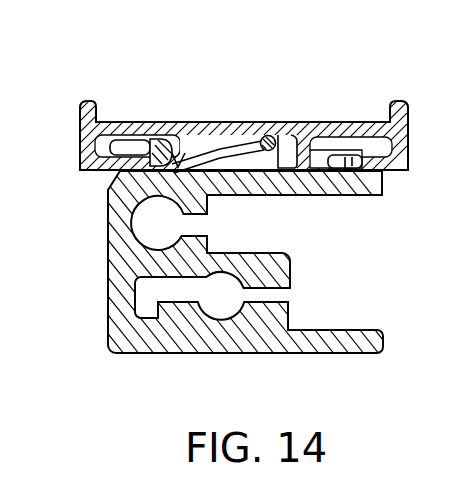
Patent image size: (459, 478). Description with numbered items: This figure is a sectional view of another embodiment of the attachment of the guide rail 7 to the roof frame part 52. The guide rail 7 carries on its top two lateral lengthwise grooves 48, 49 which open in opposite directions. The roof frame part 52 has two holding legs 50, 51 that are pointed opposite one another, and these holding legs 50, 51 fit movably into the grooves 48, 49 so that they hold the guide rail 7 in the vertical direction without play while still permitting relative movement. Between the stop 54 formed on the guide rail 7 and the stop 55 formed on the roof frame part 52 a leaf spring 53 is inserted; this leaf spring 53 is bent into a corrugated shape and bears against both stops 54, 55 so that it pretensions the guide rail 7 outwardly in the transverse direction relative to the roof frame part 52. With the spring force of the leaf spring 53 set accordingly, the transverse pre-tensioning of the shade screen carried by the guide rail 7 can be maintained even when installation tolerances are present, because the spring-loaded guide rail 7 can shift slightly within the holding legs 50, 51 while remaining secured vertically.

The guide rail 7 is at (126, 366).
The lengthwise groove 48 is at (160, 160).
The lengthwise groove 49 is at (335, 163).
The holding leg 50 is at (133, 160).
The holding leg 51 is at (357, 163).
The roof frame part 52 is at (372, 113).
The leaf spring 53 is at (227, 145).
The stop 54 is at (124, 176).
The stop 55 is at (275, 138).